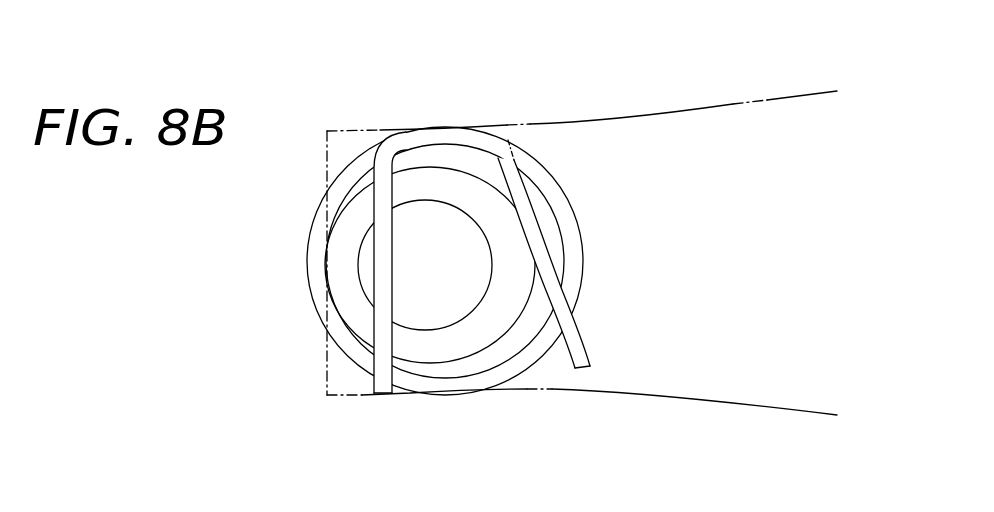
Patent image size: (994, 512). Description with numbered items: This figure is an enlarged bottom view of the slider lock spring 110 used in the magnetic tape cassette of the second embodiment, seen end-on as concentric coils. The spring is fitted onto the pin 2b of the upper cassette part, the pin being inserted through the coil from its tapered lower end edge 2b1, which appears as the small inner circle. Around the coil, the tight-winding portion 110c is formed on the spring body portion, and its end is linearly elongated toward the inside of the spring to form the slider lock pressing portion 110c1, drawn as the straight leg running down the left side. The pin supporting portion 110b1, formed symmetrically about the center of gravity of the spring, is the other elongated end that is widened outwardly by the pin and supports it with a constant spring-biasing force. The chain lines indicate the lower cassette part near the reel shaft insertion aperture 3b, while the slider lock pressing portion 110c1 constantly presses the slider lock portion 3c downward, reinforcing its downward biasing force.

The slider lock spring 110 is at (434, 303).
The tight-winding portion 110c is at (320, 290).
The slider lock pressing portion 110c1 is at (380, 390).
The pin supporting portion 110b1 is at (580, 357).
The pin 2b is at (473, 337).
The tapered lower end edge 2b1 is at (428, 200).
The reel shaft insertion aperture 3b is at (343, 377).
The slider lock portion 3c is at (732, 118).